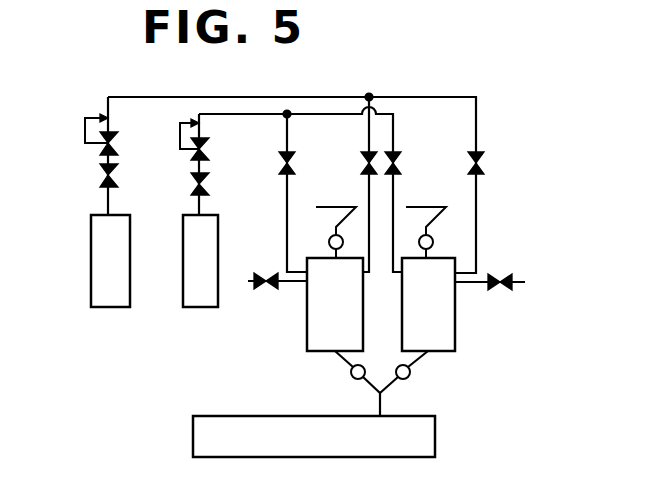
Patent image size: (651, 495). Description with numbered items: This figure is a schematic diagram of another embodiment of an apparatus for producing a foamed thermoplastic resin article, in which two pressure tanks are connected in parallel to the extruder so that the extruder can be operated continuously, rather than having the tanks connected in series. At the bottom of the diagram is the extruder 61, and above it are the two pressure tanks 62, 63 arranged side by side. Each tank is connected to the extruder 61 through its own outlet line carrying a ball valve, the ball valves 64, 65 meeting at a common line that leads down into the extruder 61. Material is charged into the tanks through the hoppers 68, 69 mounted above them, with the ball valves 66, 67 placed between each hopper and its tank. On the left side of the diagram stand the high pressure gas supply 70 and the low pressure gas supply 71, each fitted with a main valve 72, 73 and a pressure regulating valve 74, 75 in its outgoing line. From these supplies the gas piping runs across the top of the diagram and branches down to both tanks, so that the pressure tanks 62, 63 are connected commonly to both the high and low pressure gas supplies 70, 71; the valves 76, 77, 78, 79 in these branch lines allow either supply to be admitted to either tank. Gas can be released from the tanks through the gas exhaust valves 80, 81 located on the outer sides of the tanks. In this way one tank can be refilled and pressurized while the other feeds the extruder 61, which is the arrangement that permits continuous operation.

The extruder 61 is at (314, 436).
The pressure tank 62 is at (335, 304).
The pressure tank 63 is at (428, 304).
The ball valve 64 is at (347, 372).
The ball valve 65 is at (412, 372).
The ball valve 66 is at (329, 243).
The ball valve 67 is at (433, 243).
The hopper 68 is at (336, 208).
The hopper 69 is at (426, 207).
The high pressure gas supply 70 is at (110, 261).
The low pressure gas supply 71 is at (200, 261).
The main valve 72 is at (100, 176).
The main valve 73 is at (191, 185).
The pressure regulating valve 74 is at (85, 123).
The pressure regulating valve 75 is at (180, 136).
The valve 76 is at (361, 163).
The valve 77 is at (279, 163).
The valve 78 is at (484, 165).
The valve 79 is at (401, 165).
The gas exhaust valve 80 is at (265, 273).
The gas exhaust valve 81 is at (500, 274).